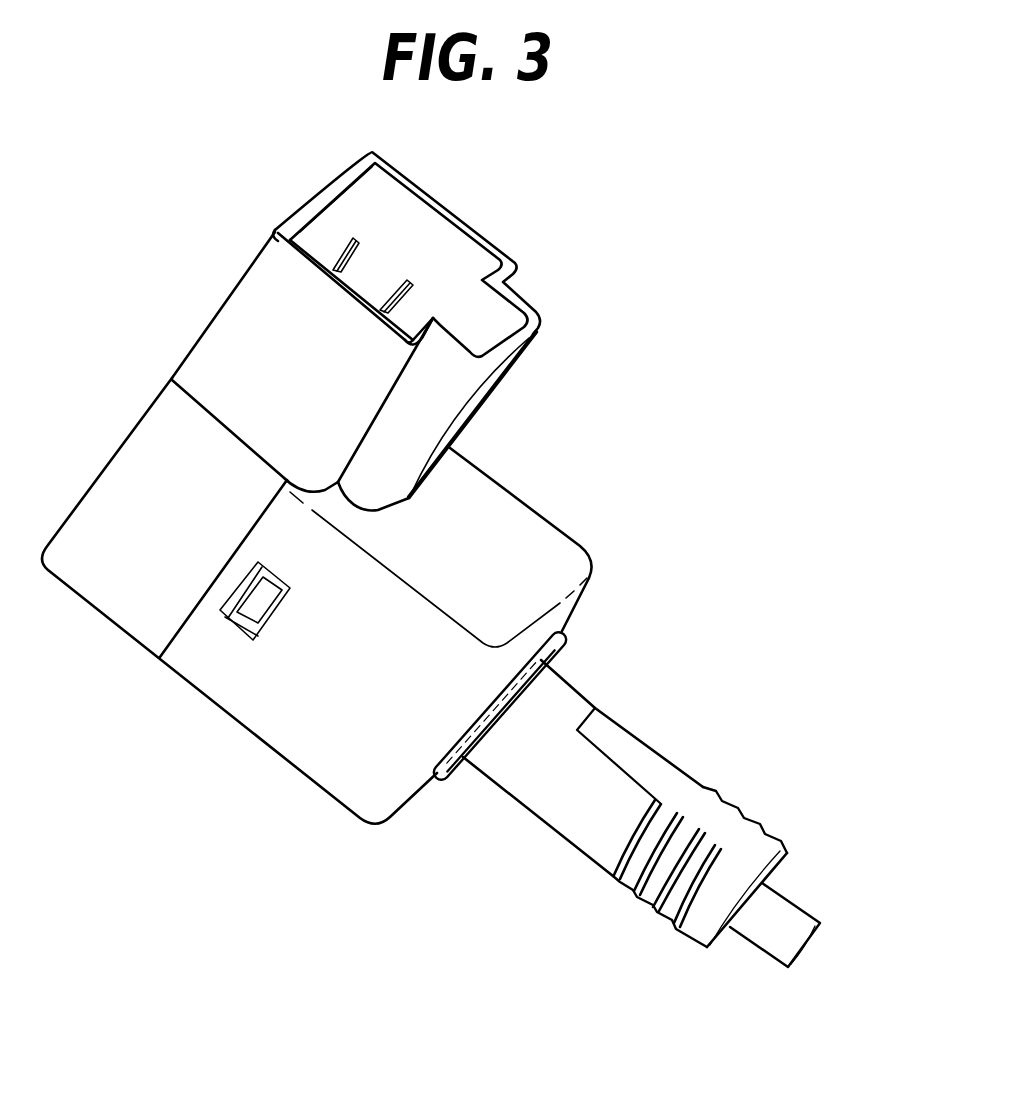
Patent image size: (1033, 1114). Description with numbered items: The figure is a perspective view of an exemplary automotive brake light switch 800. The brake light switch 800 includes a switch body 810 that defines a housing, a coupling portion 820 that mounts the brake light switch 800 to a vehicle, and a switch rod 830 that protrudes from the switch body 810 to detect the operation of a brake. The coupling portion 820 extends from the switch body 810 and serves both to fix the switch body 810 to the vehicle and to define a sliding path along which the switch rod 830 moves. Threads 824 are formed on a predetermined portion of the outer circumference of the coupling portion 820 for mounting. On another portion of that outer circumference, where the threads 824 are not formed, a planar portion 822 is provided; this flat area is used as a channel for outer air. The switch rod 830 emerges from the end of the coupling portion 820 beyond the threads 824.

The automotive brake light switch 800 is at (636, 506).
The switch body 810 is at (333, 737).
The coupling portion 820 is at (560, 792).
The planar portion 822 is at (713, 817).
The threads 824 is at (657, 917).
The switch rod 830 is at (788, 913).